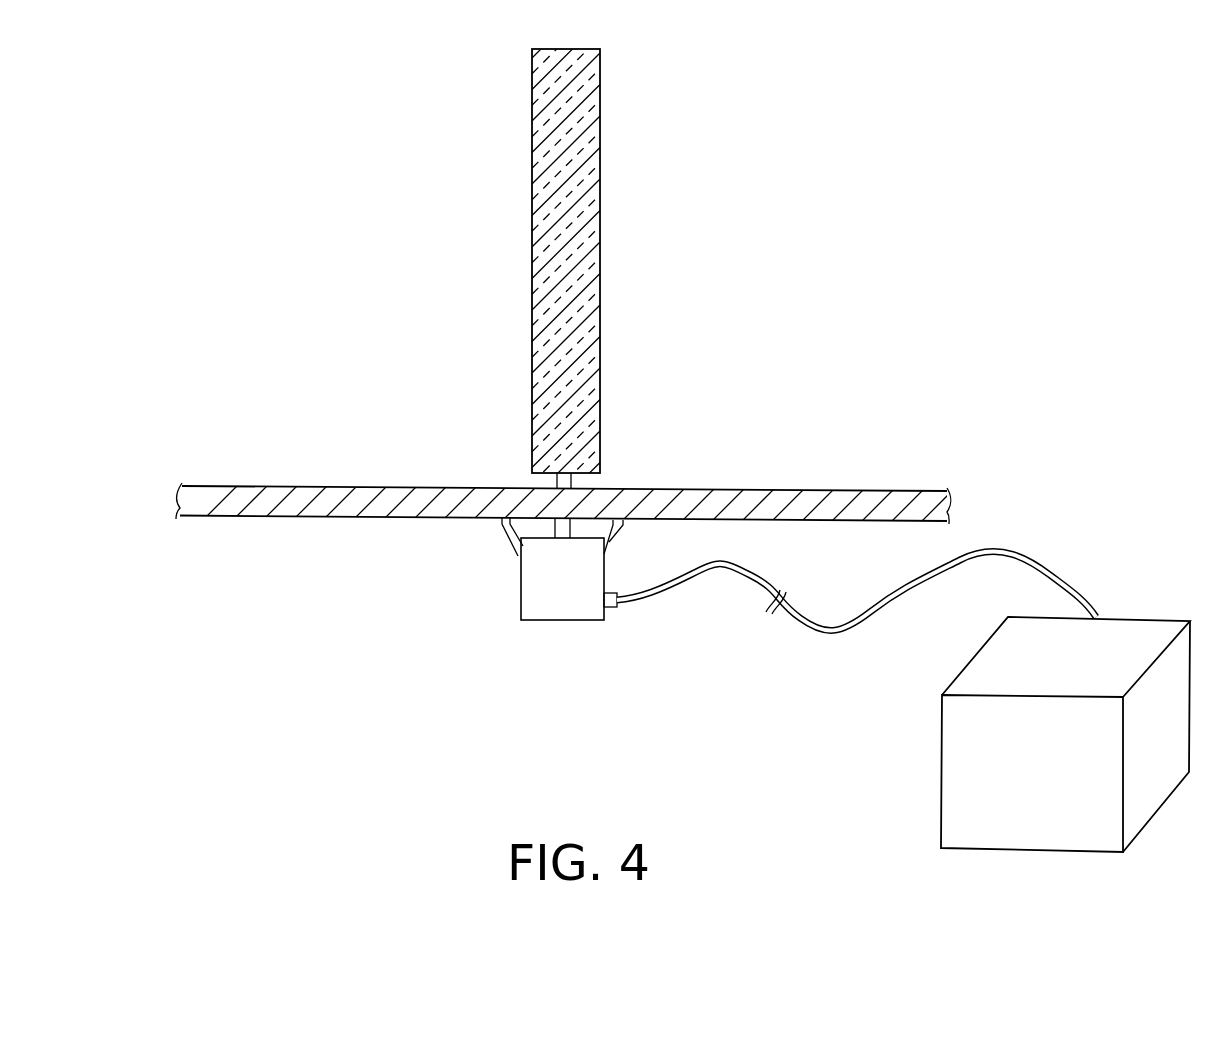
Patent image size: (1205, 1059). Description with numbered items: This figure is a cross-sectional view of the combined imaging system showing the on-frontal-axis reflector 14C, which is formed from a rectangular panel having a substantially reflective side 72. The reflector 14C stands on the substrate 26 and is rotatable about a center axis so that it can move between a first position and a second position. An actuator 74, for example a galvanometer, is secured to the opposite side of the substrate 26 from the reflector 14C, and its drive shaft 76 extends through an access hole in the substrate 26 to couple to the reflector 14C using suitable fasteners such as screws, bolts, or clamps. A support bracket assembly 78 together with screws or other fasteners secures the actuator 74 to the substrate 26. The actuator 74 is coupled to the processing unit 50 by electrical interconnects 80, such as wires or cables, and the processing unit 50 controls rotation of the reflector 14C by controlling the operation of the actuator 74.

The on-frontal-axis reflector 14C is at (737, 116).
The substantially reflective side 72 is at (526, 188).
The substrate 26 is at (803, 489).
The drive shaft 76 is at (550, 530).
The support bracket assembly 78 is at (500, 524).
The actuator 74 is at (552, 620).
The electrical interconnects 80 is at (648, 598).
The processing unit 50 is at (1047, 781).